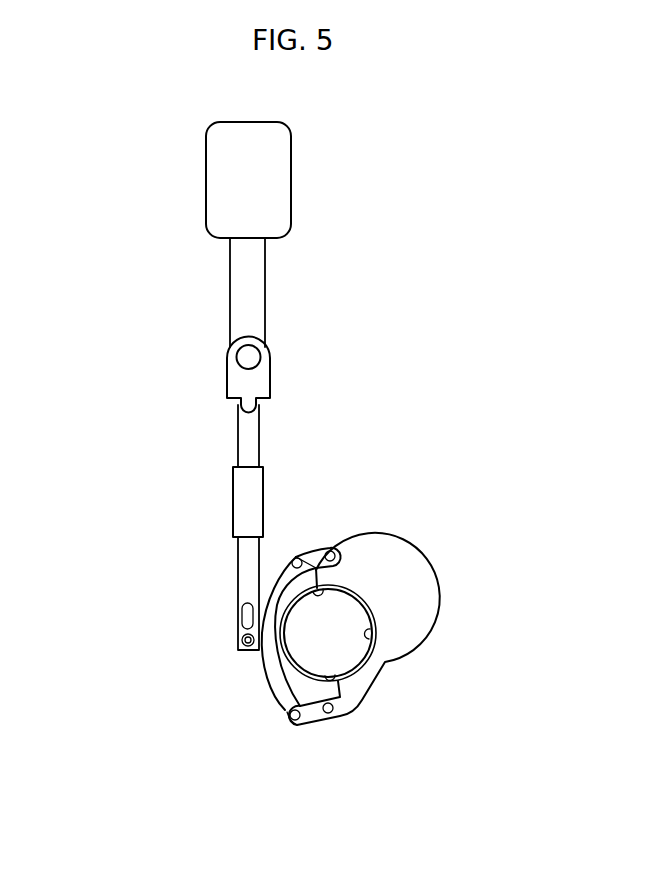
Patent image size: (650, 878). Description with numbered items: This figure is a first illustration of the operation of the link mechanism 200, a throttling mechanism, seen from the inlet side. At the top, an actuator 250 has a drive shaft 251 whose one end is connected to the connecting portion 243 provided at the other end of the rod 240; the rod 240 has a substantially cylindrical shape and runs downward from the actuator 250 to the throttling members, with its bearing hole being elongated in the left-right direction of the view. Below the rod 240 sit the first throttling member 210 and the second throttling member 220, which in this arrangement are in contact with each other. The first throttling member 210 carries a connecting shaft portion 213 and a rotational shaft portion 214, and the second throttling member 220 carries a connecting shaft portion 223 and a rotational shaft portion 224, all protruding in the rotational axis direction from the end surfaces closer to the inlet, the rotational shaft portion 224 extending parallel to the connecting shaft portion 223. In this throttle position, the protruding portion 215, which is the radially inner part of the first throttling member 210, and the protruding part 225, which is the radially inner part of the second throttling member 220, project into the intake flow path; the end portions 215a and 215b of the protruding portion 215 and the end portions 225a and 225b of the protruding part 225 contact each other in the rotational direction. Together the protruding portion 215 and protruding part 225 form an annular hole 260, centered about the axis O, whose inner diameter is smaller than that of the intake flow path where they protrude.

The link mechanism 200 is at (94, 138).
The actuator 250 is at (257, 183).
The drive shaft 251 is at (260, 302).
The connecting portion 243 is at (257, 378).
The rod 240 is at (260, 437).
The annular hole 260 is at (247, 623).
The pivot axis O is at (247, 641).
The first throttling member 210 is at (365, 697).
The second throttling member 220 is at (320, 548).
The connecting shaft portion 213 is at (298, 548).
The rotational shaft portion 214 is at (337, 552).
The connecting shaft portion 223 is at (291, 721).
The rotational shaft portion 224 is at (334, 712).
The protruding portion 215 is at (377, 632).
The end portion 215a is at (318, 602).
The end portion 215b is at (367, 660).
The protruding part 225 is at (328, 632).
The end portion 225a is at (326, 692).
The end portion 225b is at (290, 600).